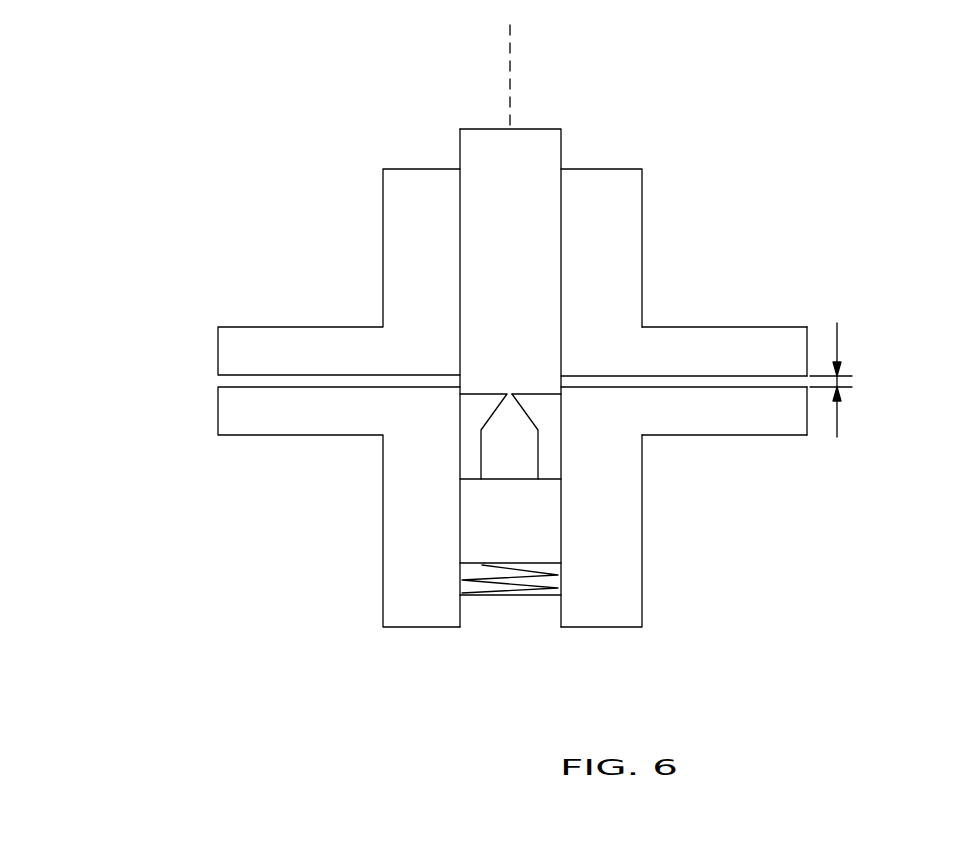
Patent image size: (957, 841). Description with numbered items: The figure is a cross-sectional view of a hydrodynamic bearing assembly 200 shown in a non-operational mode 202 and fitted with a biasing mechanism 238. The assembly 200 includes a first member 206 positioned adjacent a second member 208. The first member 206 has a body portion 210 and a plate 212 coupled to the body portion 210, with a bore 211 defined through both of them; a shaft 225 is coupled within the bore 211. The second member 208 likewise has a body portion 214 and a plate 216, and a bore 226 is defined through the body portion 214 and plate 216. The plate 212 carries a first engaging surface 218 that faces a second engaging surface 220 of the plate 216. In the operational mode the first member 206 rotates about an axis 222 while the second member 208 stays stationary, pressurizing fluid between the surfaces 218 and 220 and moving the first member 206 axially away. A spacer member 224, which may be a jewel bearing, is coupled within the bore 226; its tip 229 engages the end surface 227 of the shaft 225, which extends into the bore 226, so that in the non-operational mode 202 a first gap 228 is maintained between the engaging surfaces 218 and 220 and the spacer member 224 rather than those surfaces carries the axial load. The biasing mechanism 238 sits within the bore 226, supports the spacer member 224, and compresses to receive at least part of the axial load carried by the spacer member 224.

The hydrodynamic bearing assembly 200 is at (182, 148).
The non-operational mode 202 is at (786, 184).
The first member 206 is at (323, 251).
The second member 208 is at (304, 492).
The body portion 210 is at (618, 213).
The bore 211 is at (460, 203).
The plate 212 is at (678, 336).
The body portion 214 is at (618, 540).
The plate 216 is at (725, 422).
The first engaging surface 218 is at (757, 376).
The second engaging surface 220 is at (773, 388).
The axis 222 is at (512, 75).
The spacer member 224 is at (471, 522).
The shaft 225 is at (563, 148).
The bore 226 is at (547, 618).
The end surface 227 is at (545, 395).
The first gap 228 is at (853, 381).
The tip 229 is at (506, 395).
The biasing mechanism 238 is at (560, 593).